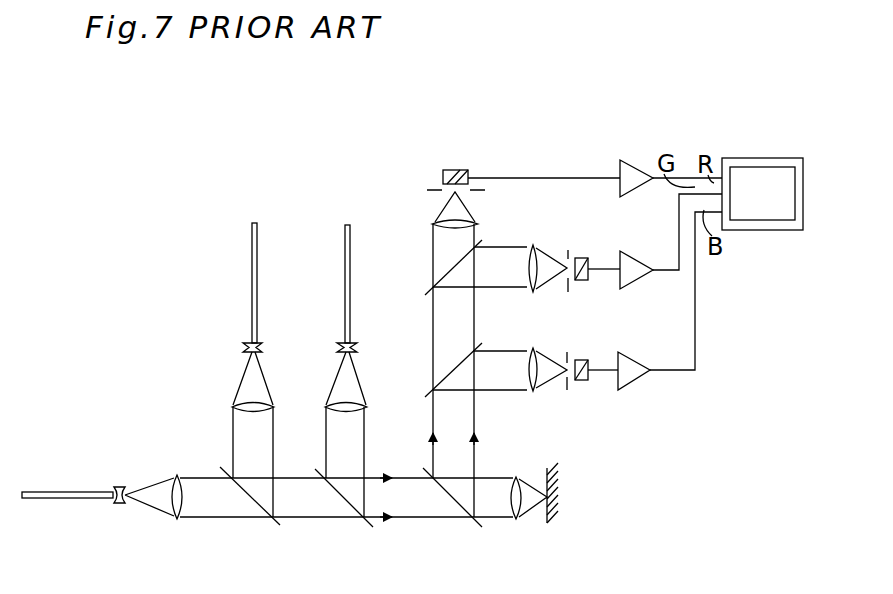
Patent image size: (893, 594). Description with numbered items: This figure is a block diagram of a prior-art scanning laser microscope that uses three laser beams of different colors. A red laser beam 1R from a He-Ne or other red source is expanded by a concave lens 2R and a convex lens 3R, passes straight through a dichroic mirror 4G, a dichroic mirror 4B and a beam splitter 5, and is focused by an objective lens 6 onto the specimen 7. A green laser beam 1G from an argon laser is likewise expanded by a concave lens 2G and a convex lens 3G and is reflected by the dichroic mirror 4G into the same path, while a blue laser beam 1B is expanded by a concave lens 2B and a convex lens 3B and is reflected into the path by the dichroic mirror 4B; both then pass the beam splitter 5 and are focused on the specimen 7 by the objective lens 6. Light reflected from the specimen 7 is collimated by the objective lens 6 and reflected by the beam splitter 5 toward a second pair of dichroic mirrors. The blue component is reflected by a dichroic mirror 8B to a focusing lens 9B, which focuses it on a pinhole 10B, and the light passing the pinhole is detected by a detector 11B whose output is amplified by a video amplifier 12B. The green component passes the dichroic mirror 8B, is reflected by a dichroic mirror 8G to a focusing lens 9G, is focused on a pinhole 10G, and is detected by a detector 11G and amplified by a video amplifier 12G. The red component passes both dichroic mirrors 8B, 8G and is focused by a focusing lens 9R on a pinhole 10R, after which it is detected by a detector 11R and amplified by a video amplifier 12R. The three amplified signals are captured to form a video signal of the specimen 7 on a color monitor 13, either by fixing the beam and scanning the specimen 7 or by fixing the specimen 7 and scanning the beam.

The red laser beam 1R is at (72, 498).
The concave lens 2R is at (118, 507).
The convex lens 3R is at (175, 519).
The dichroic mirror 4G is at (273, 521).
The dichroic mirror 4B is at (372, 526).
The beam splitter 5 is at (480, 528).
The objective lens 6 is at (517, 520).
The specimen 7 is at (558, 475).
The green laser beam 1G is at (252, 272).
The concave lens 2G is at (245, 346).
The convex lens 3G is at (235, 406).
The blue laser beam 1B is at (345, 268).
The concave lens 2B is at (338, 346).
The convex lens 3B is at (328, 406).
The dichroic mirror 8G is at (427, 295).
The dichroic mirror 8B is at (430, 394).
The focusing lens 9R is at (436, 222).
The focusing lens 9G is at (535, 293).
The focusing lens 9B is at (533, 392).
The pinhole 10R is at (438, 188).
The pinhole 10G is at (567, 291).
The pinhole 10B is at (566, 392).
The detector 11R is at (458, 171).
The detector 11G is at (585, 258).
The detector 11B is at (590, 382).
The video amplifier 12R is at (632, 163).
The video amplifier 12G is at (635, 262).
The video amplifier 12B is at (630, 360).
The color monitor 13 is at (758, 232).